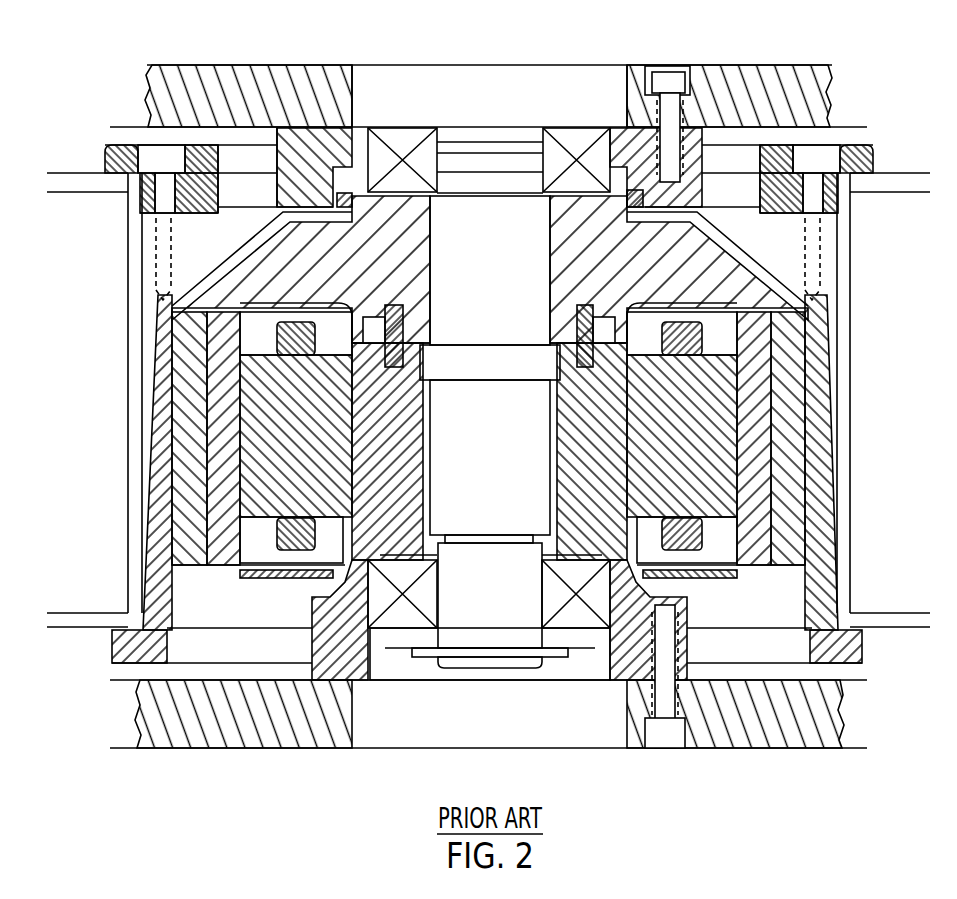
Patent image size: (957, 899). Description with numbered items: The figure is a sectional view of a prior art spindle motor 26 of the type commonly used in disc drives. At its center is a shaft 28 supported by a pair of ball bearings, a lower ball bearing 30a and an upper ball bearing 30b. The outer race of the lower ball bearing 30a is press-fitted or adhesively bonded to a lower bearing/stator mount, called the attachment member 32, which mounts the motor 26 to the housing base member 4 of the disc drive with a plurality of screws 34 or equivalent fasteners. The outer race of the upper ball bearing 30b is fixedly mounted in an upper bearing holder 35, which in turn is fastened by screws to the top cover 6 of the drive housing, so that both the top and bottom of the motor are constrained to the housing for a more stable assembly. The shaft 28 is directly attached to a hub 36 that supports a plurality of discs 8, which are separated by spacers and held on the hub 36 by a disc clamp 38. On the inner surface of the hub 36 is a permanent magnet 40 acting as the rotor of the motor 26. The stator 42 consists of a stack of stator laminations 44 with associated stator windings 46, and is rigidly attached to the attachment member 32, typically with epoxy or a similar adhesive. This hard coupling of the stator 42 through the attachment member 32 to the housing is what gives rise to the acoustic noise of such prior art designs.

The housing base member 4 is at (827, 718).
The top cover 6 is at (218, 77).
The discs 8 is at (902, 182).
The spindle motor 26 is at (78, 331).
The shaft 28 is at (481, 210).
The lower ball bearing 30a is at (403, 613).
The upper ball bearing 30b is at (405, 132).
The attachment member 32 is at (362, 537).
The screws 34 is at (665, 732).
The upper bearing holder 35 is at (628, 127).
The hub 36 is at (757, 282).
The disc clamp 38 is at (855, 145).
The permanent magnet 40 is at (753, 415).
The stator 42 is at (647, 340).
The stator laminations 44 is at (253, 402).
The stator windings 46 is at (277, 530).